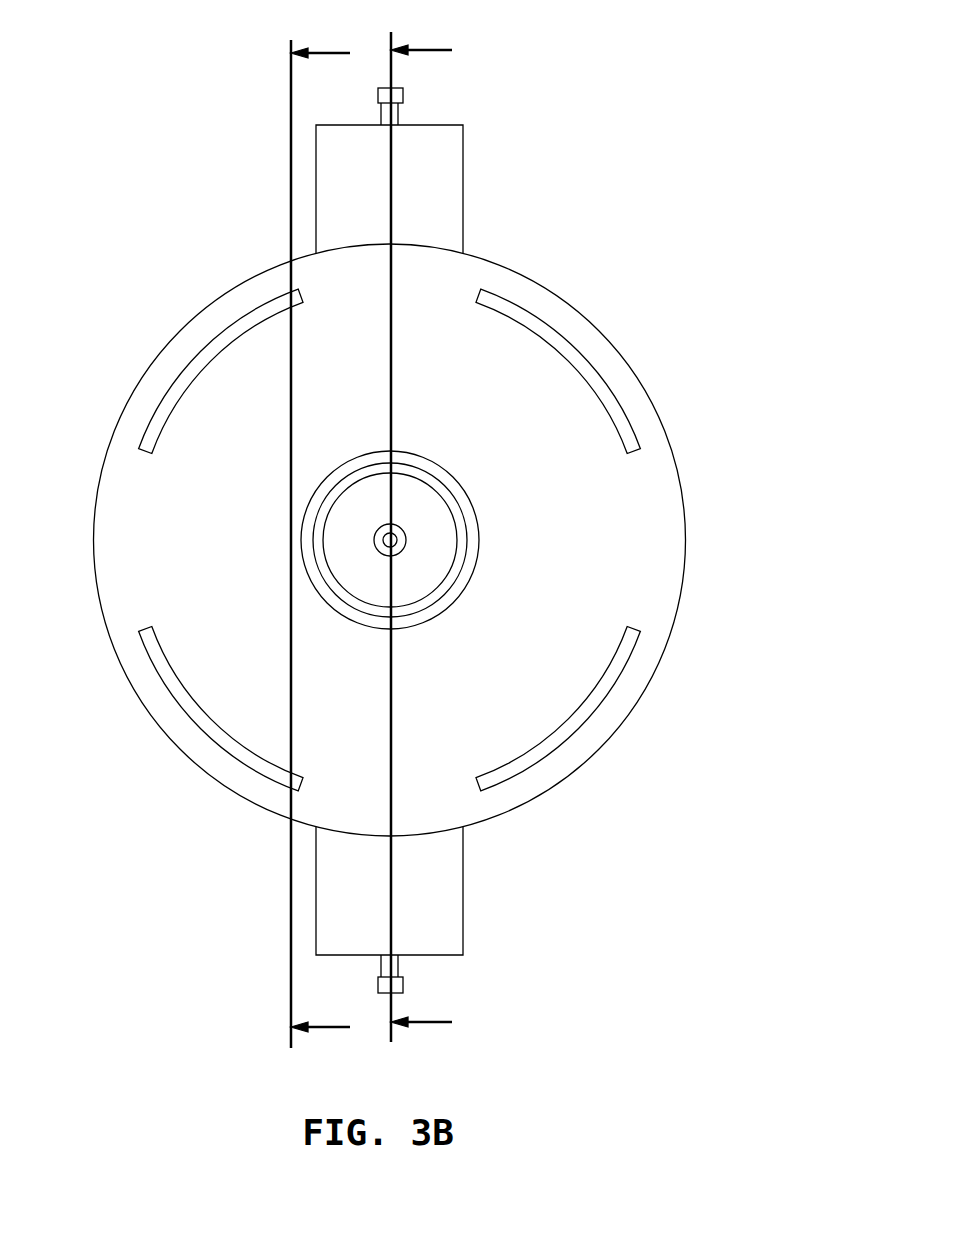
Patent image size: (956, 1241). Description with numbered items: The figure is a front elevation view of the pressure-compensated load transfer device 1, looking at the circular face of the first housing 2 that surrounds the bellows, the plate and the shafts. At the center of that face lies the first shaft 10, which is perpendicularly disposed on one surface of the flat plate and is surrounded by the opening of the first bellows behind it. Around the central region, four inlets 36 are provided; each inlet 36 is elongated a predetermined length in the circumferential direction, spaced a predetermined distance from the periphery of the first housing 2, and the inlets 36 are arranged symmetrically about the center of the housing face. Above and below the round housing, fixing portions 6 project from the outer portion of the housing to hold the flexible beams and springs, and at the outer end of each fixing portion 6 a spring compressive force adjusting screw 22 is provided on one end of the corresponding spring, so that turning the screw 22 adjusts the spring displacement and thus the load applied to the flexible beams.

The pressure-compensated load transfer device 1 is at (635, 243).
The first housing 2 is at (133, 692).
The fixing portion 6 is at (328, 172).
The first shaft 10 is at (402, 536).
The spring compressive force adjusting screw 22 is at (403, 91).
The inlet 36 is at (178, 388).